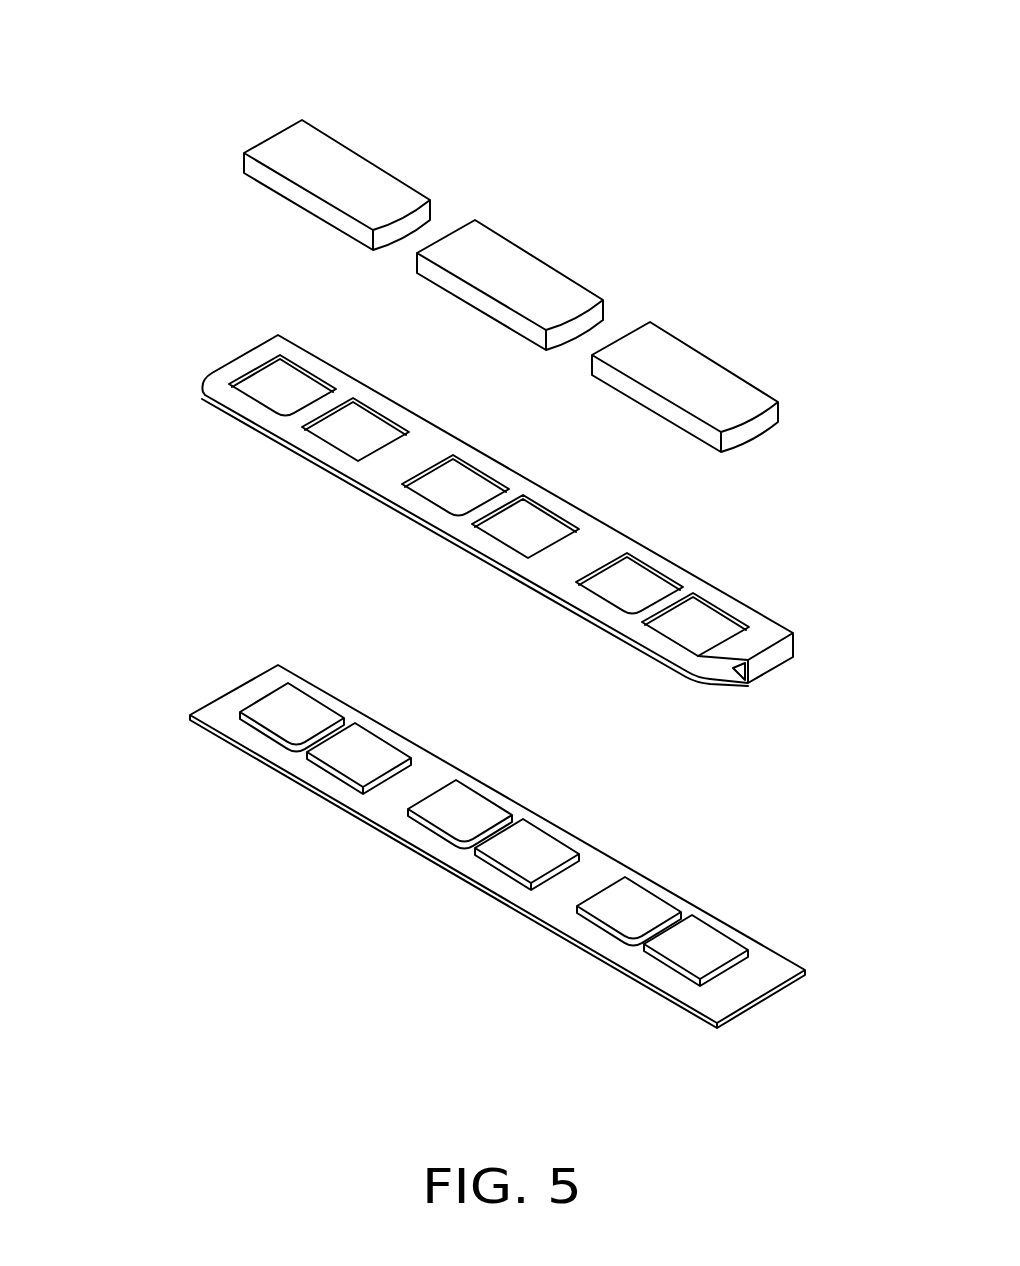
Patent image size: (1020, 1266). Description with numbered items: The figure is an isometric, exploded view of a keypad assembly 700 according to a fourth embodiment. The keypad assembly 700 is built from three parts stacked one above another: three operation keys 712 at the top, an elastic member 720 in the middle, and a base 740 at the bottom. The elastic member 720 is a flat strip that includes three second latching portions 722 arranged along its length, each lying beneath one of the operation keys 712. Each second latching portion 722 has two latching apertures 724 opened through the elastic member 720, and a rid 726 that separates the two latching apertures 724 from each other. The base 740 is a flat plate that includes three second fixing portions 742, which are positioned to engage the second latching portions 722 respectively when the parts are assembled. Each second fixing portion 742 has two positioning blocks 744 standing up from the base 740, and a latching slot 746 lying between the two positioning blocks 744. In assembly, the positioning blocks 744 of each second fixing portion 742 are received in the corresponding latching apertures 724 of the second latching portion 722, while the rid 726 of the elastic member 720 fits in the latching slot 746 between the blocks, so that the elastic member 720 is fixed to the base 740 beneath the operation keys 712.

The keypad assembly 700 is at (448, 514).
The operation keys 712 is at (355, 167).
The elastic member 720 is at (757, 578).
The second latching portions 722 is at (108, 405).
The latching apertures 724 is at (333, 435).
The rid 726 is at (317, 408).
The base 740 is at (737, 907).
The second fixing portions 742 is at (133, 740).
The positioning blocks 744 is at (365, 757).
The latching slot 746 is at (320, 730).